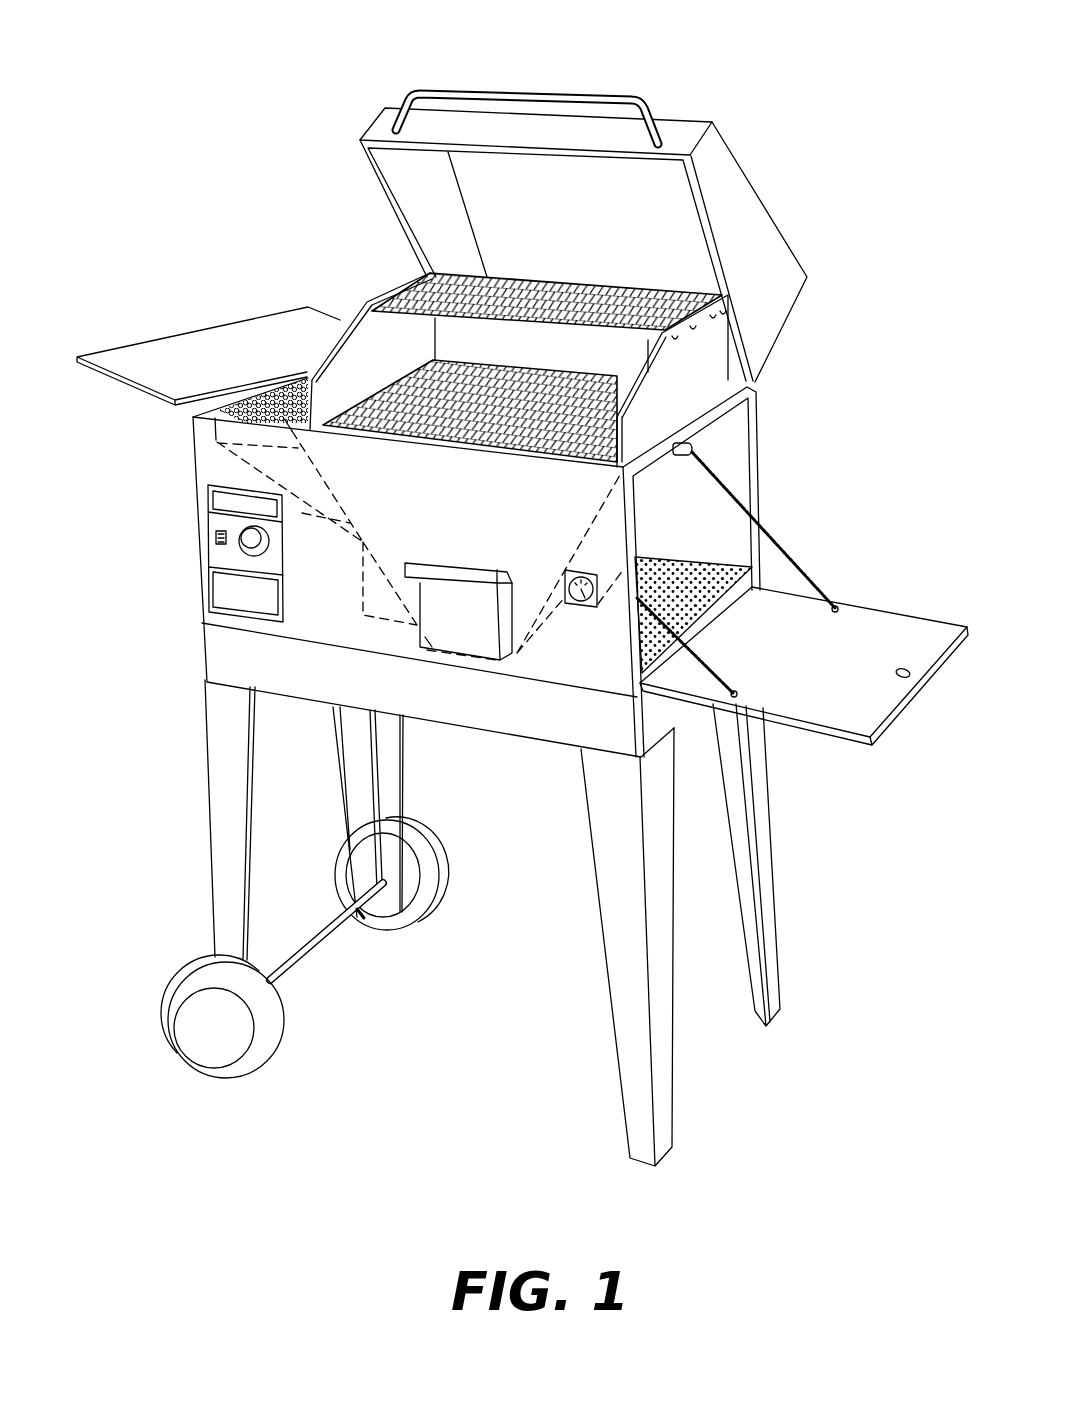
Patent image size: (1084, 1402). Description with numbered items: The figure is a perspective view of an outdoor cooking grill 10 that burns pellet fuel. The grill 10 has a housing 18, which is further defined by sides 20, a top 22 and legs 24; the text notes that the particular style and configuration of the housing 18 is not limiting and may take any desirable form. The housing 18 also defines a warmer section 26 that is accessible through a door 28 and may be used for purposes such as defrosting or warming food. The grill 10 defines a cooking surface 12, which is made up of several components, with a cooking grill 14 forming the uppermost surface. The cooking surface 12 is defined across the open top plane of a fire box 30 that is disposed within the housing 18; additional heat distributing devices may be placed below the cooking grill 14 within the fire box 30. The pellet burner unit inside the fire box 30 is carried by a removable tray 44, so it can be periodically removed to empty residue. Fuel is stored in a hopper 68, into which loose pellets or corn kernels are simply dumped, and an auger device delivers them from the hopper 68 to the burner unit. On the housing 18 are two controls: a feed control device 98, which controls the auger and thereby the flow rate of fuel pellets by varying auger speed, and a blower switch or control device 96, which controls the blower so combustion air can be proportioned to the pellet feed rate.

The grill 10 is at (196, 131).
The cooking surface 12 is at (364, 330).
The cooking grill 14 is at (493, 432).
The housing 18 is at (748, 385).
The sides 20 is at (197, 530).
The top 22 is at (766, 206).
The legs 24 is at (212, 791).
The warmer section 26 is at (708, 502).
The door 28 is at (896, 617).
The fire box 30 is at (348, 534).
The removable tray 44 is at (460, 622).
The hopper 68 is at (252, 338).
The blower switch or control device 96 is at (217, 546).
The feed control device 98 is at (250, 547).